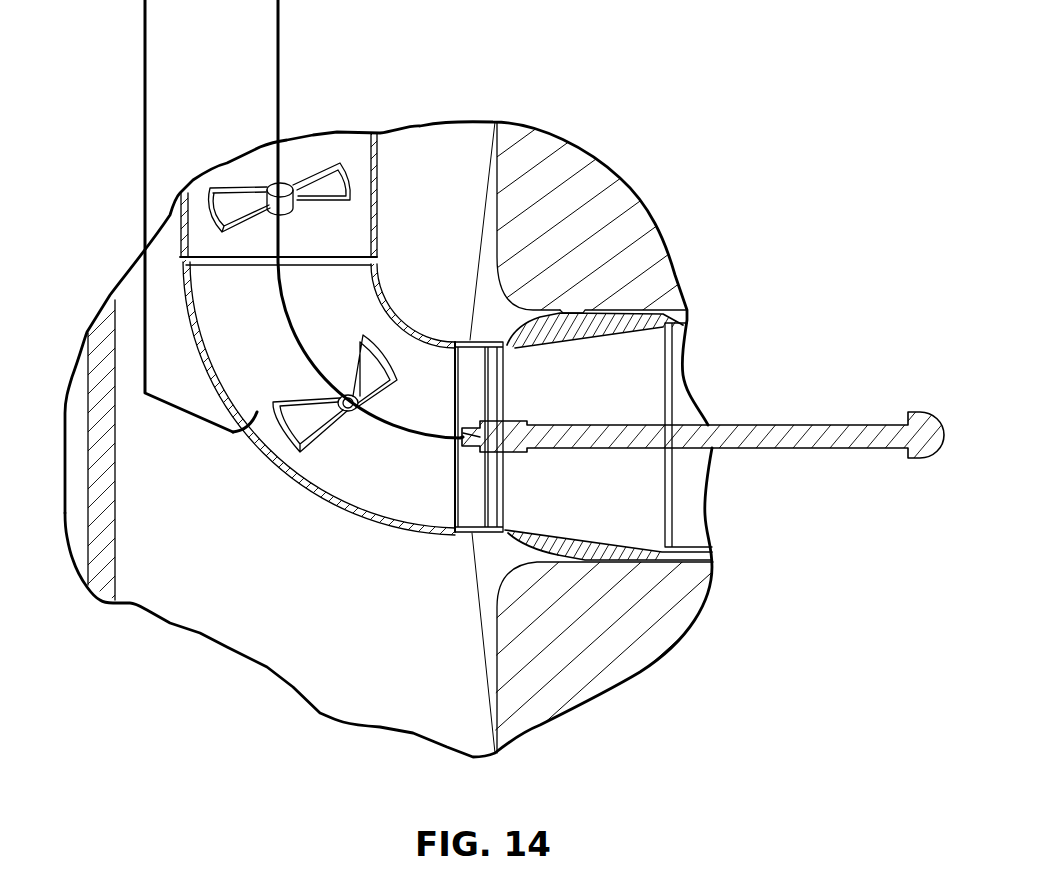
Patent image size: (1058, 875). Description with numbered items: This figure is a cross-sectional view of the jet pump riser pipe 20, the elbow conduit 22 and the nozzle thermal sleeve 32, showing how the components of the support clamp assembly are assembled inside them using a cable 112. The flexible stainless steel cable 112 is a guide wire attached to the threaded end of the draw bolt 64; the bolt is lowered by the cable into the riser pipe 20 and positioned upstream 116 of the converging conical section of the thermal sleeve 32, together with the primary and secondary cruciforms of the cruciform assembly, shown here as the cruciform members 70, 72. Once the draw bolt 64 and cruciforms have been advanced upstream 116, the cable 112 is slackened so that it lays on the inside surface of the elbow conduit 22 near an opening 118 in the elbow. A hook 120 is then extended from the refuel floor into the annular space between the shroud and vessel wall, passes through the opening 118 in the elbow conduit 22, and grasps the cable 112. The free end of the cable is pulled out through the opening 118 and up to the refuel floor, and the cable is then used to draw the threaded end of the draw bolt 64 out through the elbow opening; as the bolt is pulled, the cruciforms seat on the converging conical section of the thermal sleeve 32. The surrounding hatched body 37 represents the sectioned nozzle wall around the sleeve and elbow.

The riser pipe 20 is at (192, 217).
The elbow conduit 22 is at (215, 291).
The thermal sleeve 32 is at (620, 310).
The housing body 37 is at (573, 187).
The draw bolt 64 is at (775, 437).
The impeller 70 is at (393, 357).
The impeller 72 is at (313, 173).
The cable 112 is at (311, 0).
The upstream 116 is at (690, 415).
The opening 118 is at (253, 412).
The hook 120 is at (189, 216).